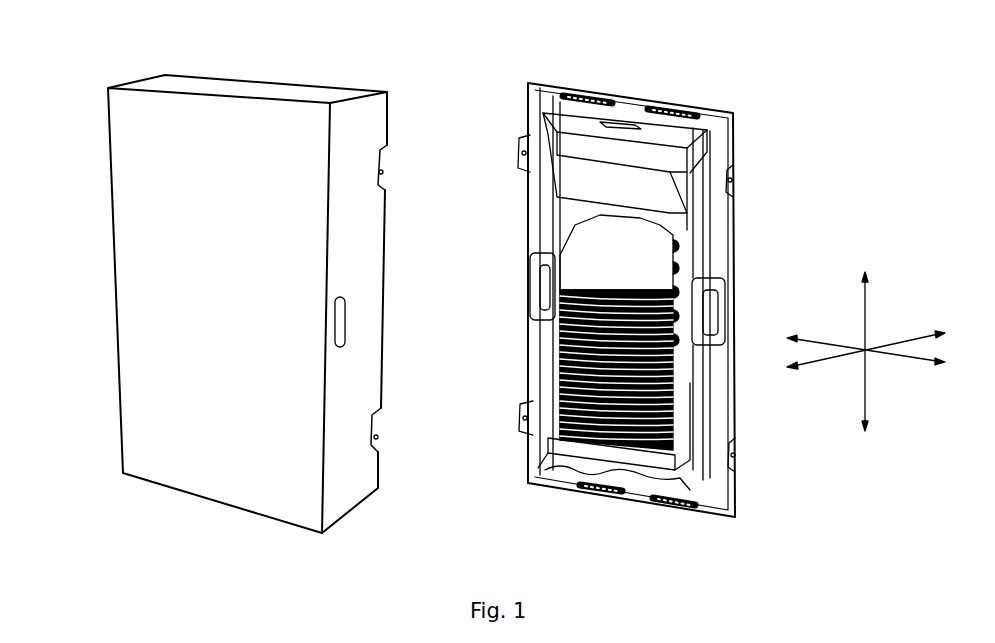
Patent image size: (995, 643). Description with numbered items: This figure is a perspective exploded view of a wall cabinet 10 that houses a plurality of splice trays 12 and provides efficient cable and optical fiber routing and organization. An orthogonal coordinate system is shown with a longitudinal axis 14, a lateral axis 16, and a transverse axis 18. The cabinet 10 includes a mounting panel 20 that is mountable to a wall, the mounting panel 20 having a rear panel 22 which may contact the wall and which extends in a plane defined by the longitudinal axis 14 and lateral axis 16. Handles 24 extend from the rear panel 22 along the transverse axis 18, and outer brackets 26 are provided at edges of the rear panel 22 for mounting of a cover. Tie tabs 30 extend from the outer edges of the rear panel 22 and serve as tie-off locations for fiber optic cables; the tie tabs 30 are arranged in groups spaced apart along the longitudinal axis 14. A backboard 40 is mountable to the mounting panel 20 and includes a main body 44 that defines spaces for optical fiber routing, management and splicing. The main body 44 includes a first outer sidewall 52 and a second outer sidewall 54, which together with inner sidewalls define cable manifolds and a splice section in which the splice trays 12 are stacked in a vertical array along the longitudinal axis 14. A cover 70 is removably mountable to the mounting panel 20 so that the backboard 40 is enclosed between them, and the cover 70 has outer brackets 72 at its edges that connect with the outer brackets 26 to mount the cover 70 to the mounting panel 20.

The wall cabinet 10 is at (776, 90).
The splice tray 12 is at (572, 274).
The longitudinal axis 14 is at (866, 313).
The lateral axis 16 is at (898, 356).
The transverse axis 18 is at (900, 342).
The mounting panel 20 is at (593, 88).
The rear panel 22 is at (635, 107).
The handle 24 is at (728, 281).
The outer bracket 26 is at (735, 186).
The tie tab 30 is at (685, 105).
The backboard 40 is at (713, 246).
The main body 44 is at (683, 452).
The first outer sidewall 52 is at (553, 220).
The second outer sidewall 54 is at (690, 383).
The cover 70 is at (148, 251).
The outer bracket 72 is at (388, 148).